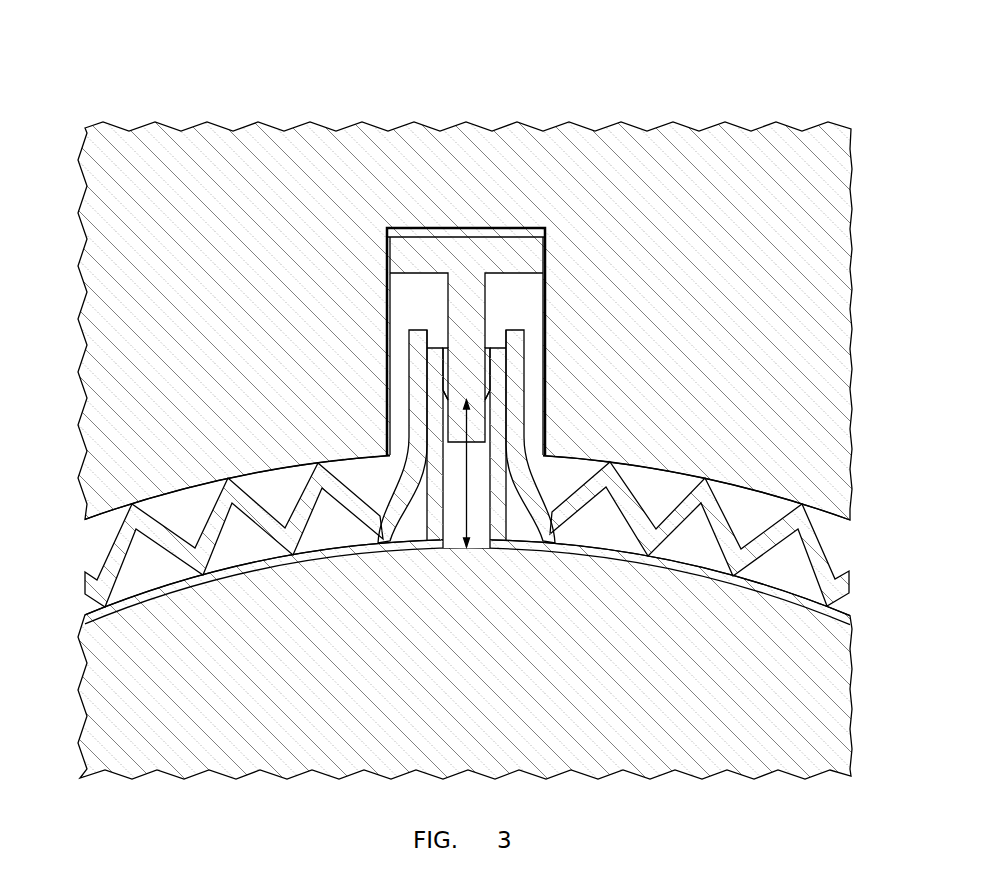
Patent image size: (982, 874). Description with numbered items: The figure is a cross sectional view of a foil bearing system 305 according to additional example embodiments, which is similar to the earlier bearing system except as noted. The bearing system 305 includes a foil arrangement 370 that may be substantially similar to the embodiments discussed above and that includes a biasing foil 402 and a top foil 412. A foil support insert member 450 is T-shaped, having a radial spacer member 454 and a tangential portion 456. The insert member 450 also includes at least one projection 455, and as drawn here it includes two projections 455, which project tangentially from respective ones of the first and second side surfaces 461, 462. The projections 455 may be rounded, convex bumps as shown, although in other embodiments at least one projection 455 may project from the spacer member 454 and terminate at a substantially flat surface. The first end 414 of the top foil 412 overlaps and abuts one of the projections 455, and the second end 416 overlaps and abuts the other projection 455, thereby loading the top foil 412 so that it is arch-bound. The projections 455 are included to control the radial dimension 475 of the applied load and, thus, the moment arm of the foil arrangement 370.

The bearing system 305 is at (147, 107).
The biasing foil 402 is at (120, 542).
The foil arrangement 370 is at (78, 576).
The top foil 412 is at (78, 627).
The foil support insert member 450 is at (518, 252).
The tangential portion 456 is at (408, 253).
The first side surface 461 is at (443, 321).
The second side surface 462 is at (525, 304).
The radial spacer member 454 is at (470, 347).
The projection 455 is at (457, 392).
The first end 414 is at (410, 434).
The second end 416 is at (523, 432).
The radial dimension 475 is at (467, 540).